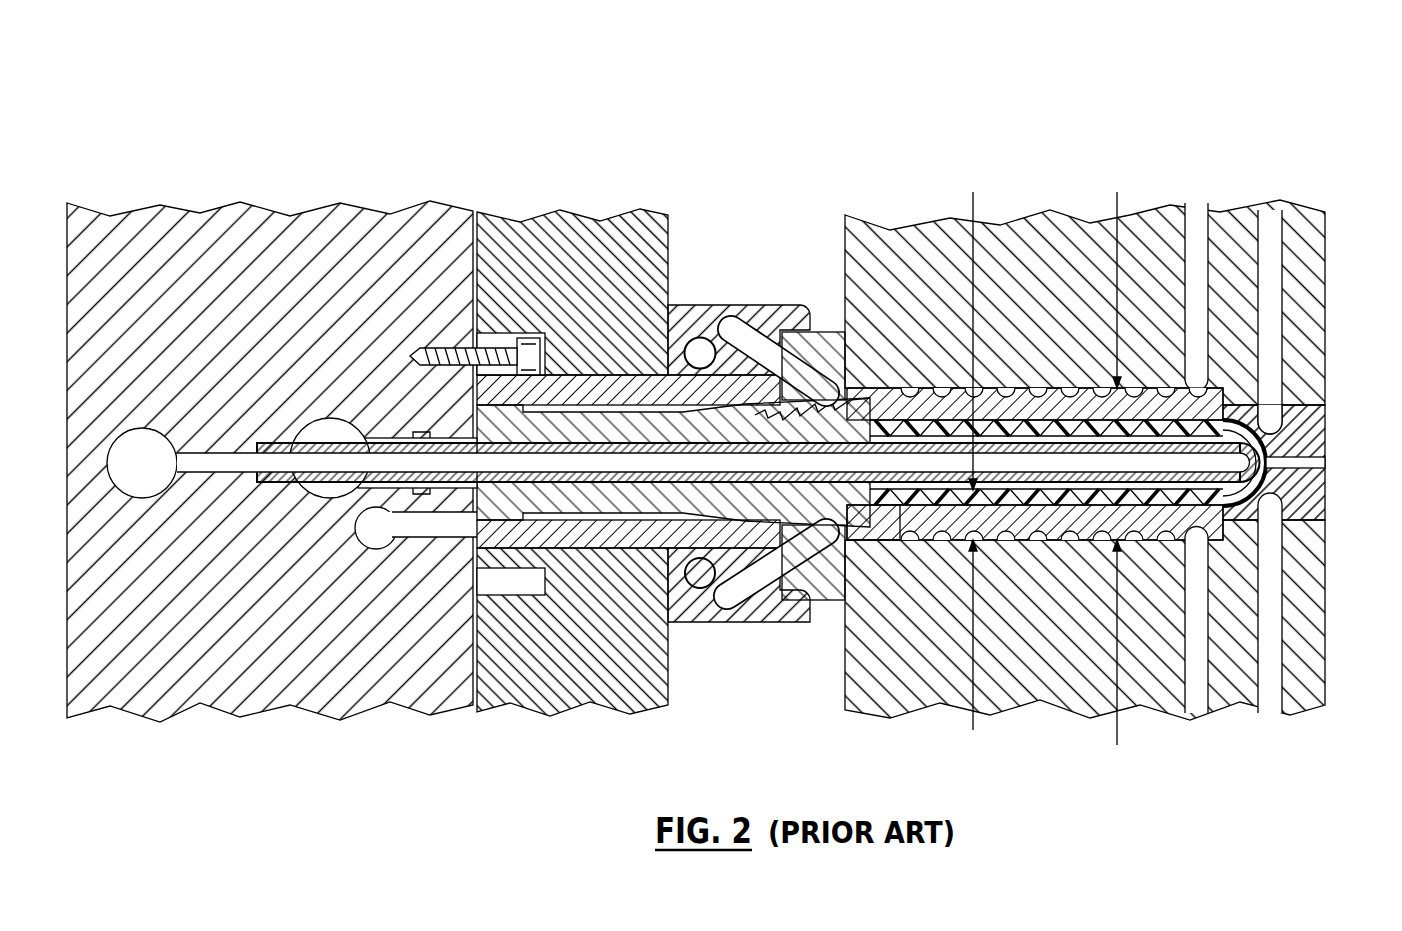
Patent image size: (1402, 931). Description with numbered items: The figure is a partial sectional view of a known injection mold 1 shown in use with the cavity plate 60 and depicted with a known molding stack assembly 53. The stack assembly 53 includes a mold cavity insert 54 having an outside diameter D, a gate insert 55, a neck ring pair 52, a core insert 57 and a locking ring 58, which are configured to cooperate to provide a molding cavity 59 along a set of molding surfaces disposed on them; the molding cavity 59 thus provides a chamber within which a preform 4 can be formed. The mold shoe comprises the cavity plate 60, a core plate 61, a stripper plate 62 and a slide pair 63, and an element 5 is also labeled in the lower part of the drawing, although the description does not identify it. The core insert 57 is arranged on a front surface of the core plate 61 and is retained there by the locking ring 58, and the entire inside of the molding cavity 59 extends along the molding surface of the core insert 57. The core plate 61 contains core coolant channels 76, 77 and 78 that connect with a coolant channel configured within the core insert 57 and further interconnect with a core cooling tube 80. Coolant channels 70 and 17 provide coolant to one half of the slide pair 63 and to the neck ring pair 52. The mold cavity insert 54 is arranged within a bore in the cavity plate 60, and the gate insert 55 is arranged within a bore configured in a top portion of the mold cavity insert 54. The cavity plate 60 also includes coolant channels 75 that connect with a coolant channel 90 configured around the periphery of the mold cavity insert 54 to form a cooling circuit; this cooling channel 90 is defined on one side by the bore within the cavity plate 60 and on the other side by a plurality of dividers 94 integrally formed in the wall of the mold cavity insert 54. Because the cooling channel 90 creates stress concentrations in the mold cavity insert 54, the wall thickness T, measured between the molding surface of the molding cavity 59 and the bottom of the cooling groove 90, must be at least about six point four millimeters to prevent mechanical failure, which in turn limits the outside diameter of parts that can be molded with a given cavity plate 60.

The injection mold 1 is at (734, 396).
The preform 4 is at (886, 542).
The lower retaining piece 5 is at (822, 582).
The coolant channel 17 is at (792, 360).
The neck ring pair 52 is at (822, 318).
The molding stack assembly 53 is at (1338, 417).
The mold cavity insert 54 is at (1053, 407).
The gate insert 55 is at (1307, 520).
The core insert 57 is at (603, 427).
The locking ring 58 is at (657, 397).
The molding cavity 59 is at (942, 420).
The cavity plate 60 is at (940, 662).
The core plate 61 is at (222, 682).
The stripper plate 62 is at (563, 686).
The slide pair 63 is at (755, 610).
The coolant channel 70 is at (732, 318).
The coolant channels 75 is at (1257, 222).
The core coolant channel 76 is at (145, 447).
The core coolant channel 77 is at (220, 452).
The core coolant channel 78 is at (330, 438).
The core cooling tube 80 is at (277, 447).
The coolant channel 90 is at (1050, 532).
The dividers 94 is at (997, 535).